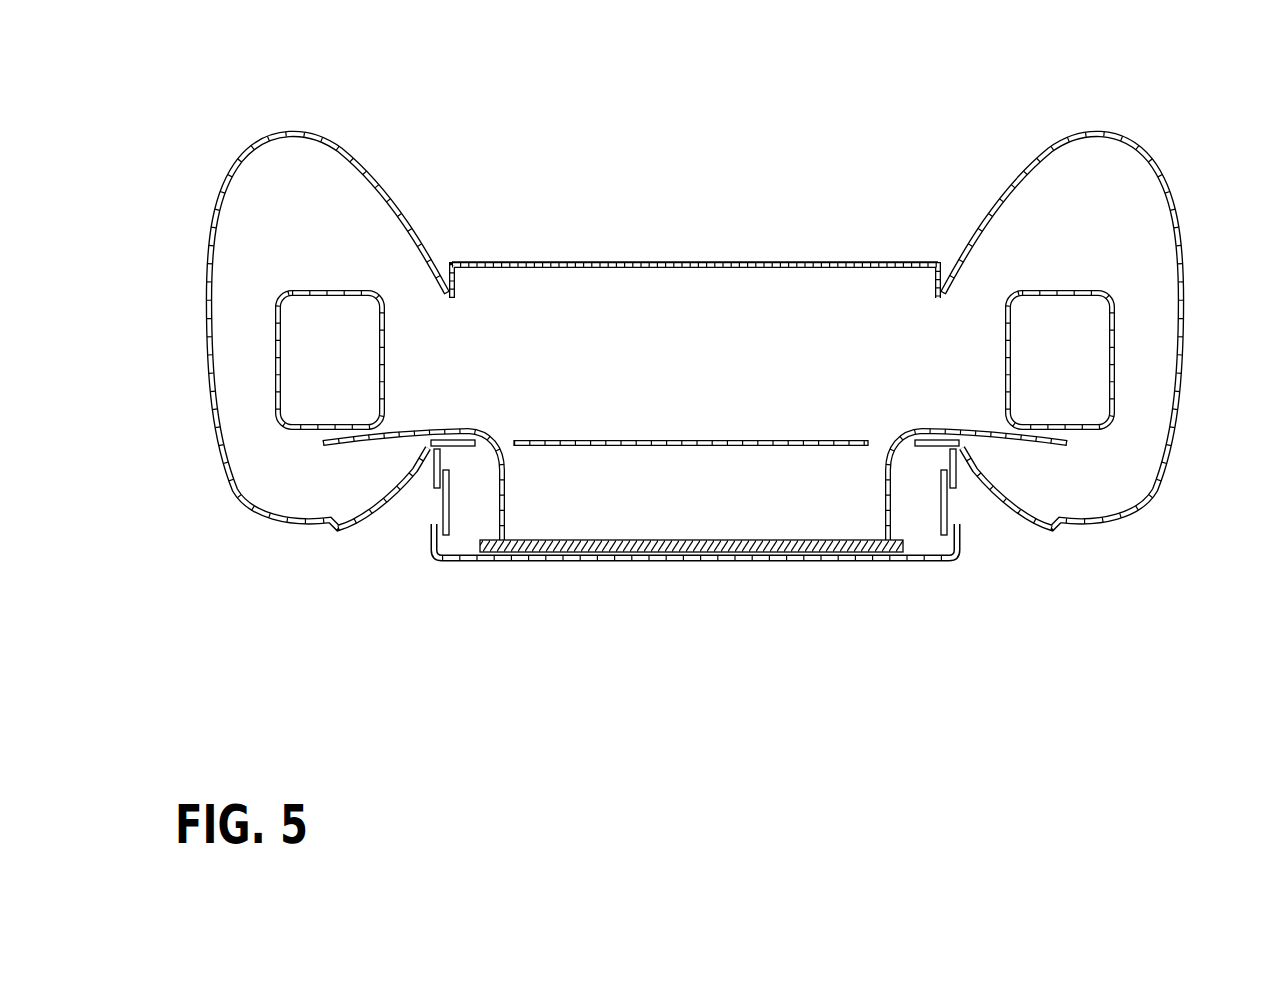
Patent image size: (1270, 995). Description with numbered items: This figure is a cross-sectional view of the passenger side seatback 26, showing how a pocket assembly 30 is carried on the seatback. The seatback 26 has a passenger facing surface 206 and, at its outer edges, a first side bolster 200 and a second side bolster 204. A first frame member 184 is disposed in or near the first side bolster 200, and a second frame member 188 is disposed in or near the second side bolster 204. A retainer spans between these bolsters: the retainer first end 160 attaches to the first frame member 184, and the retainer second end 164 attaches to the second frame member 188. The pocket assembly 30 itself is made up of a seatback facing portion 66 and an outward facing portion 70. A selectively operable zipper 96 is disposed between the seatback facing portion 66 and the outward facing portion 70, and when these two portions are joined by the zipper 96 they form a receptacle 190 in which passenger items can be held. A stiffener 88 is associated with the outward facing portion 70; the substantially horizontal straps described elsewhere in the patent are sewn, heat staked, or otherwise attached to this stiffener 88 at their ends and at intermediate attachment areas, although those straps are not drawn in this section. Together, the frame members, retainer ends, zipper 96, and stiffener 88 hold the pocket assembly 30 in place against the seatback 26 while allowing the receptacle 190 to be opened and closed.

The seatback 26 is at (695, 218).
The pocket assembly 30 is at (700, 375).
The seatback facing portion 66 is at (668, 440).
The outward facing portion 70 is at (470, 557).
The stiffener 88 is at (617, 543).
The zipper 96 is at (441, 502).
The retainer first end 160 is at (465, 432).
The retainer second end 164 is at (950, 430).
The first frame member 184 is at (273, 373).
The second frame member 188 is at (1110, 341).
The receptacle 190 is at (712, 495).
The first side bolster 200 is at (270, 185).
The second side bolster 204 is at (1110, 180).
The passenger facing surface 206 is at (735, 260).